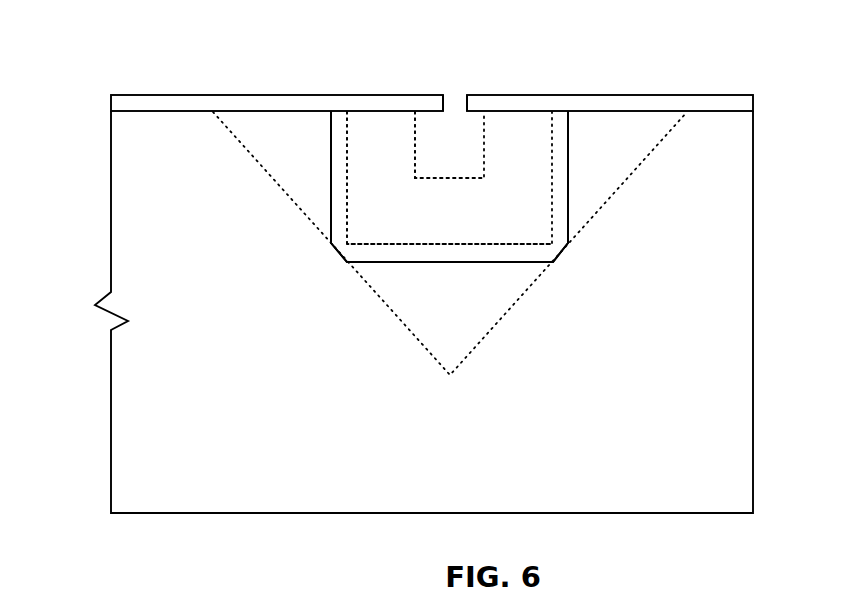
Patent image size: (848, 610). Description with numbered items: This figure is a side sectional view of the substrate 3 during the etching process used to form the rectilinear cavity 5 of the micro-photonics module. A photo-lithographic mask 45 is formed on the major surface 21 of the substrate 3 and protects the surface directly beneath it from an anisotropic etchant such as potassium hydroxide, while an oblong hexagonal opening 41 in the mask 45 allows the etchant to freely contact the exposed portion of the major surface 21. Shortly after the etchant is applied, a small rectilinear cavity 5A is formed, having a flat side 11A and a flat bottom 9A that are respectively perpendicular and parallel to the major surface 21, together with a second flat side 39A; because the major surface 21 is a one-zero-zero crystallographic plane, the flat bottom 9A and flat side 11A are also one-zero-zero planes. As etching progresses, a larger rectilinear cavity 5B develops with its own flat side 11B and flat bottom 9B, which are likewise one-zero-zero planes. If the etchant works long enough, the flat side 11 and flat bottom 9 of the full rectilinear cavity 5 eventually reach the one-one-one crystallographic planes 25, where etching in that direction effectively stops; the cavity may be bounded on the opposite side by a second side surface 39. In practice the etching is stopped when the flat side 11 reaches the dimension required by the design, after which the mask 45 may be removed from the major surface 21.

The substrate 3 is at (136, 472).
The rectilinear cavity 5 is at (571, 203).
The small rectilinear cavity 5A is at (457, 123).
The larger rectilinear cavity 5B is at (521, 198).
The flat bottom 9 is at (448, 263).
The flat bottom 9A is at (450, 179).
The flat bottom 9B is at (450, 245).
The flat side 11 is at (330, 178).
The flat side 11A is at (415, 145).
The flat side 11B is at (348, 177).
The major surface 21 is at (662, 127).
The 111 crystallographic planes 25 is at (382, 302).
The second side surface 39 is at (566, 178).
The second flat side 39A is at (485, 145).
The oblong hexagonal opening 41 is at (465, 108).
The photo-lithographic mask 45 is at (143, 95).